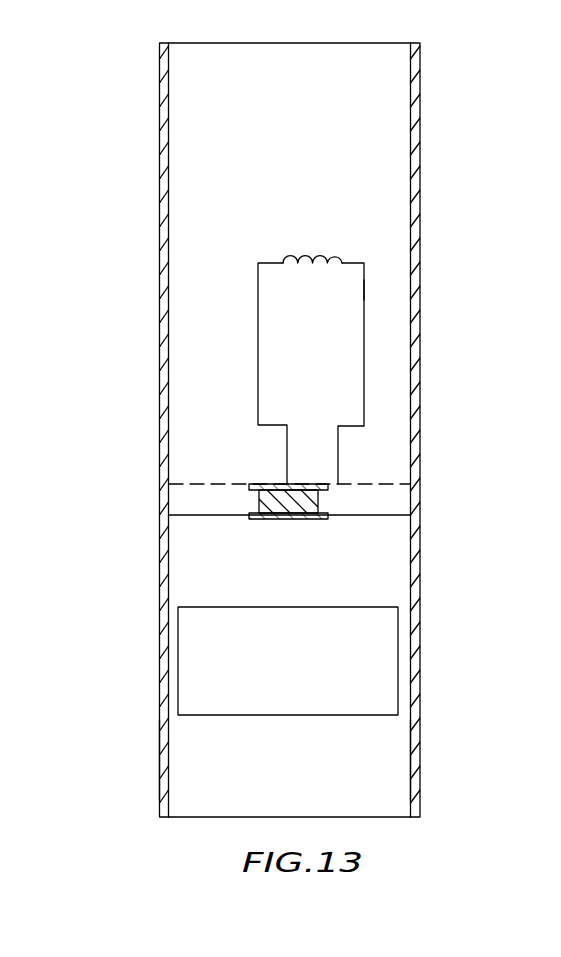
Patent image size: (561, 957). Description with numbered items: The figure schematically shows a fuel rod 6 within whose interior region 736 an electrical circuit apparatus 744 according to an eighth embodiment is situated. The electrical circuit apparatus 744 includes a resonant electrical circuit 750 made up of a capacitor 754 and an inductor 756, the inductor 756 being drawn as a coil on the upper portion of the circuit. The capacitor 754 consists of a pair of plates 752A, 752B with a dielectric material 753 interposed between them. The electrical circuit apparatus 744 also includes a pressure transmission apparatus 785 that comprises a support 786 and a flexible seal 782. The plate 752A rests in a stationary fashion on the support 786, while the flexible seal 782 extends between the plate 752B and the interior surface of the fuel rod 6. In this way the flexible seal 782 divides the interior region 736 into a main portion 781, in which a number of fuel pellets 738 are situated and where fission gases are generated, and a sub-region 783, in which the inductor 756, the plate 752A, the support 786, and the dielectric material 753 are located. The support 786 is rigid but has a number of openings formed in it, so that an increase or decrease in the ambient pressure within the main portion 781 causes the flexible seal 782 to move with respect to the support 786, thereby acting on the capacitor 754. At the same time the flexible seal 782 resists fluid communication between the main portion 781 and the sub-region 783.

The sub-region 783 is at (378, 68).
The resonant electrical circuit 750 is at (367, 344).
The inductor 756 is at (312, 249).
The electrical circuit apparatus 744 is at (366, 282).
The support 786 is at (383, 483).
The flexible seal 782 is at (392, 515).
The plate 752A is at (266, 482).
The dielectric material 753 is at (259, 503).
The plate 752B is at (305, 520).
The capacitor 754 is at (258, 520).
The pressure transmission apparatus 785 is at (272, 520).
The fuel pellets 738 is at (340, 607).
The fuel rod 6 is at (158, 725).
The main portion 781 is at (192, 760).
The interior region 736 is at (386, 752).